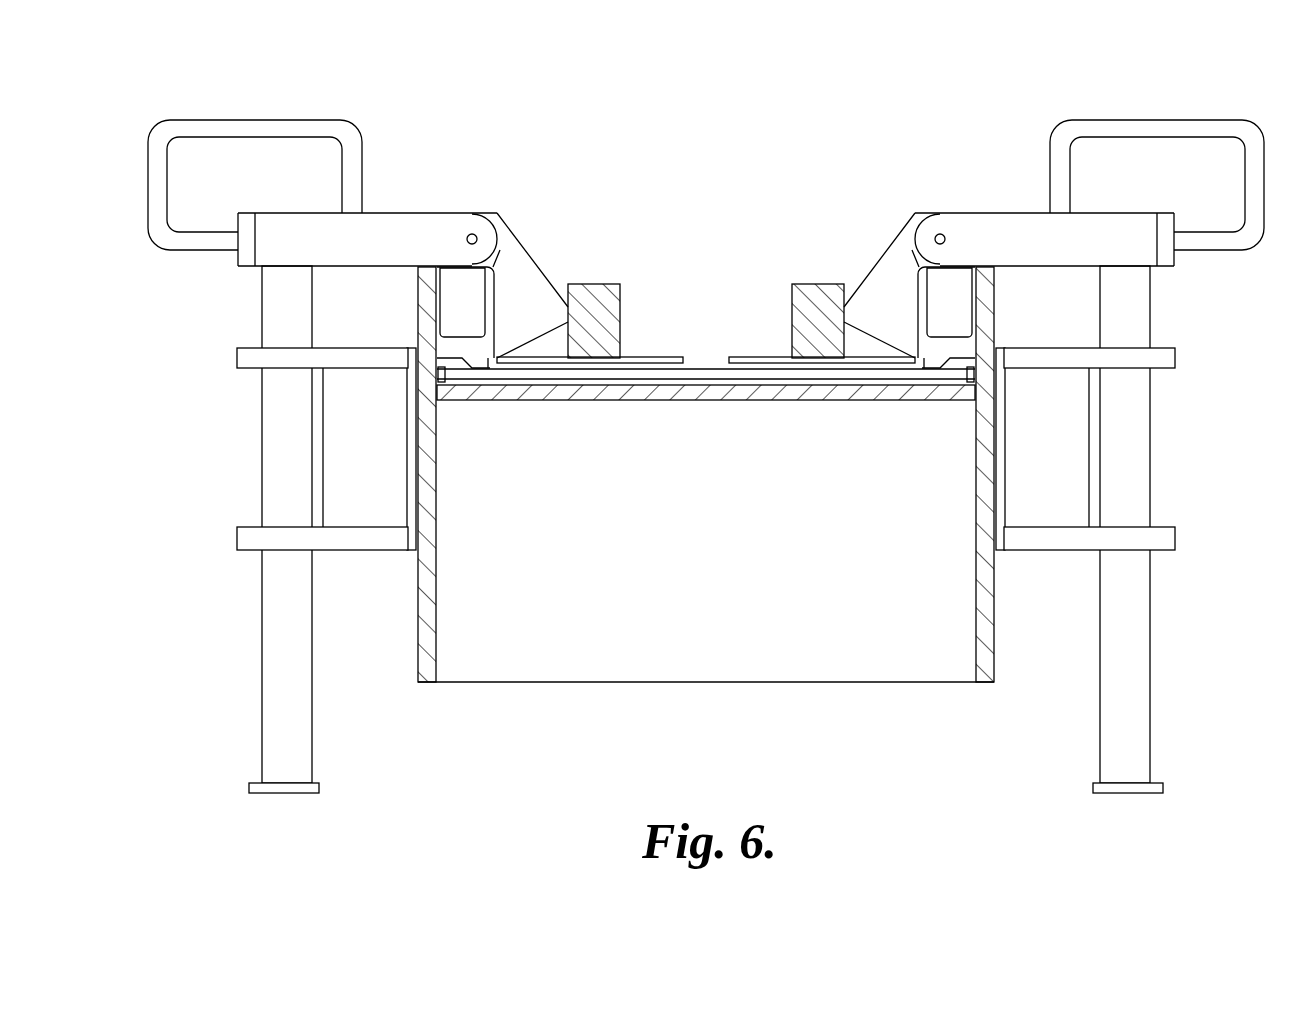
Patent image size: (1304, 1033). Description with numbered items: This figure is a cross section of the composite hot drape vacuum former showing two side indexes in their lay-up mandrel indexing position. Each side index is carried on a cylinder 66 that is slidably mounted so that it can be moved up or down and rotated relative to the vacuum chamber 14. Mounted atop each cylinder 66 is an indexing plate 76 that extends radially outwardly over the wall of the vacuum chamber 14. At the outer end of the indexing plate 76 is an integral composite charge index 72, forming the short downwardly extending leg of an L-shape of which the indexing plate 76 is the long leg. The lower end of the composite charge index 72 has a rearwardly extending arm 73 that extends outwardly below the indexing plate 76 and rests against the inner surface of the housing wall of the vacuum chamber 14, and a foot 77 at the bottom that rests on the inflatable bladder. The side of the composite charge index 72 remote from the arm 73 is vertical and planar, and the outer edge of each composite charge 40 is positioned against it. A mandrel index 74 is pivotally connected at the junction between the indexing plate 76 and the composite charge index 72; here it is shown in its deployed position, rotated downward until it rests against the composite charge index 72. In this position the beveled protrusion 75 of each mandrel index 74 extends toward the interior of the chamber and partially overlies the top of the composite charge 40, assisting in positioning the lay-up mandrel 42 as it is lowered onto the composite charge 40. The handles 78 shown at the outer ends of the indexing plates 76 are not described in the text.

The vacuum chamber 14 is at (418, 632).
The composite charge 40 is at (645, 357).
The lay-up mandrel 42 is at (605, 290).
The cylinder 66 is at (1147, 655).
The composite charge index 72 is at (492, 282).
The rearwardly extending arm 73 is at (458, 348).
The mandrel index 74 is at (540, 280).
The beveled protrusion 75 is at (525, 250).
The indexing plate 76 is at (378, 215).
The foot 77 is at (492, 355).
The handle 78 is at (220, 122).